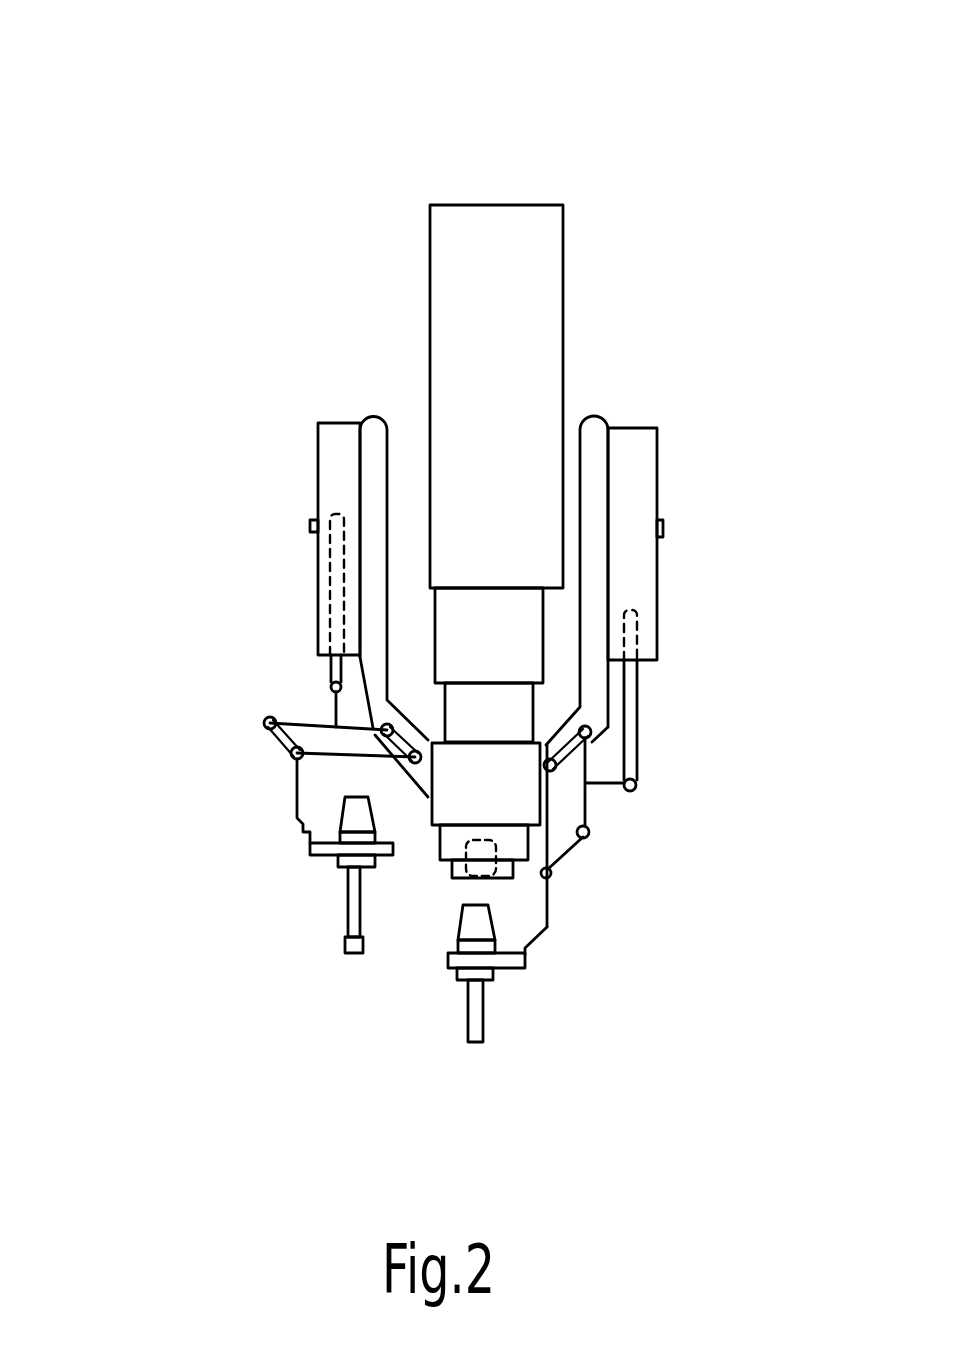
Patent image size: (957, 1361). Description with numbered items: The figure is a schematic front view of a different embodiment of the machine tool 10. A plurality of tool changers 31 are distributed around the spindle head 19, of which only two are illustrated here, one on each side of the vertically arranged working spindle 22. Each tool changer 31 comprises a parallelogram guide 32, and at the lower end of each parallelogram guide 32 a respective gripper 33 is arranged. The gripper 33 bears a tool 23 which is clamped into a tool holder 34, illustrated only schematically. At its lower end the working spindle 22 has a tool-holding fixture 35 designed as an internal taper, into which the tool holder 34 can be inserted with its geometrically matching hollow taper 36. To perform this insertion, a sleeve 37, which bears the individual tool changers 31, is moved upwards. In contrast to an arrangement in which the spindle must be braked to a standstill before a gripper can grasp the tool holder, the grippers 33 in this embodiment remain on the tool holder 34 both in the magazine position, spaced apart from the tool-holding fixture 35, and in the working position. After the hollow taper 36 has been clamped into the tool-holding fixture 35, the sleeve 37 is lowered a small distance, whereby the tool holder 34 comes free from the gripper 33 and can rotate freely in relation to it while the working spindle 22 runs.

The machine tool 10 is at (459, 612).
The spindle head 19 is at (523, 382).
The working spindle 22 is at (517, 843).
The tool 23 is at (488, 1022).
The tool changer 31 is at (296, 488).
The parallelogram guide 32 is at (268, 766).
The gripper 33 is at (447, 962).
The tool holder 34 is at (332, 862).
The tool-holding fixture 35 is at (470, 878).
The hollow taper 36 is at (457, 928).
The sleeve 37 is at (467, 775).